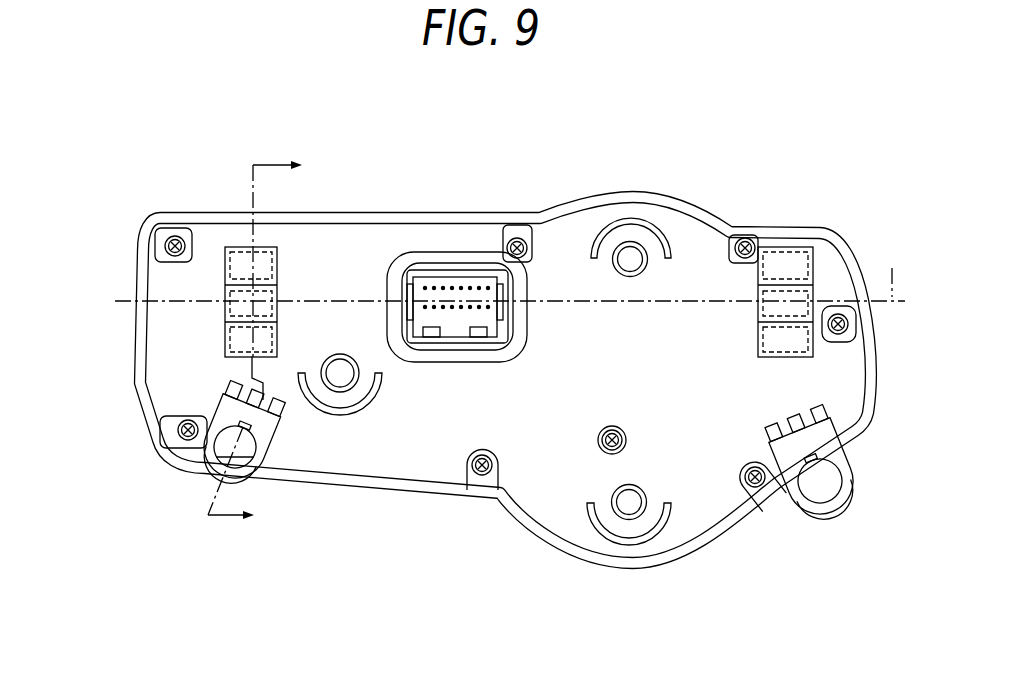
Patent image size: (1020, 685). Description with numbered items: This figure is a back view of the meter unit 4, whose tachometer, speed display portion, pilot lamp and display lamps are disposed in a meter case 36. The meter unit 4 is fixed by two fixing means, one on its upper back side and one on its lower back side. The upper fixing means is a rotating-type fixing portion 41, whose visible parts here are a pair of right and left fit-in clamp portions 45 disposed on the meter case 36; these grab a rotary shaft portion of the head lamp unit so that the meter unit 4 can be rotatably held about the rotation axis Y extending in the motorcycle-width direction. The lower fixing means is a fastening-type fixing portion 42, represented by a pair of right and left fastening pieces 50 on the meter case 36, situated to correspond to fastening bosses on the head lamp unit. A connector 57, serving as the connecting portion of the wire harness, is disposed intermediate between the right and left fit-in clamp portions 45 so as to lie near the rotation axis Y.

The meter unit 4 is at (598, 186).
The meter case 36 is at (389, 487).
The rotating-type fixing portion 41 is at (441, 260).
The fit-in clamp portions 45 is at (222, 304).
The fastening-type fixing portion 42 is at (472, 484).
The fastening pieces 50 is at (212, 478).
The connector 57 is at (454, 325).